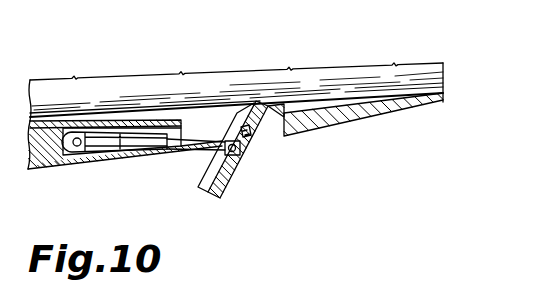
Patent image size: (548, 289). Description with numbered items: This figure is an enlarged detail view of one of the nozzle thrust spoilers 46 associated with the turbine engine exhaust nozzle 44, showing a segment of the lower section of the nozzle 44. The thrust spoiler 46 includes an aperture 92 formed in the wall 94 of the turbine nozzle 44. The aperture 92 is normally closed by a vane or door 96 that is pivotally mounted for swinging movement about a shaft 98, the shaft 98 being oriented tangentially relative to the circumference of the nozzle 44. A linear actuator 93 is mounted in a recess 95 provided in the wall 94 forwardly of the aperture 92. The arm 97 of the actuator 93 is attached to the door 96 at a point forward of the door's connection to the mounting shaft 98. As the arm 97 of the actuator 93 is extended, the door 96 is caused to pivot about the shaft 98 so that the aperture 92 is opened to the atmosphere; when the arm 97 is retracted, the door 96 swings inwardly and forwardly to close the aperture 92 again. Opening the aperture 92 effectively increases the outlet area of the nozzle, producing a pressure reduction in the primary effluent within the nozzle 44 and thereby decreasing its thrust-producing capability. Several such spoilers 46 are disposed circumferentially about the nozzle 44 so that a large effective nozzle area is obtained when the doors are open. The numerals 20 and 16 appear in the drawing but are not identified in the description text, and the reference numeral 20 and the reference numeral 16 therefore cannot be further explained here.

The turbine engine exhaust nozzle 44 is at (285, 64).
The platform 20 is at (444, 87).
The wall 94 is at (373, 115).
The aperture 92 is at (283, 123).
The support bar 16 is at (53, 169).
The recess 95 is at (157, 132).
The linear actuator 93 is at (107, 133).
The arm 97 is at (187, 153).
The nozzle thrust spoiler 46 is at (239, 179).
The door 96 is at (218, 199).
The shaft 98 is at (241, 126).